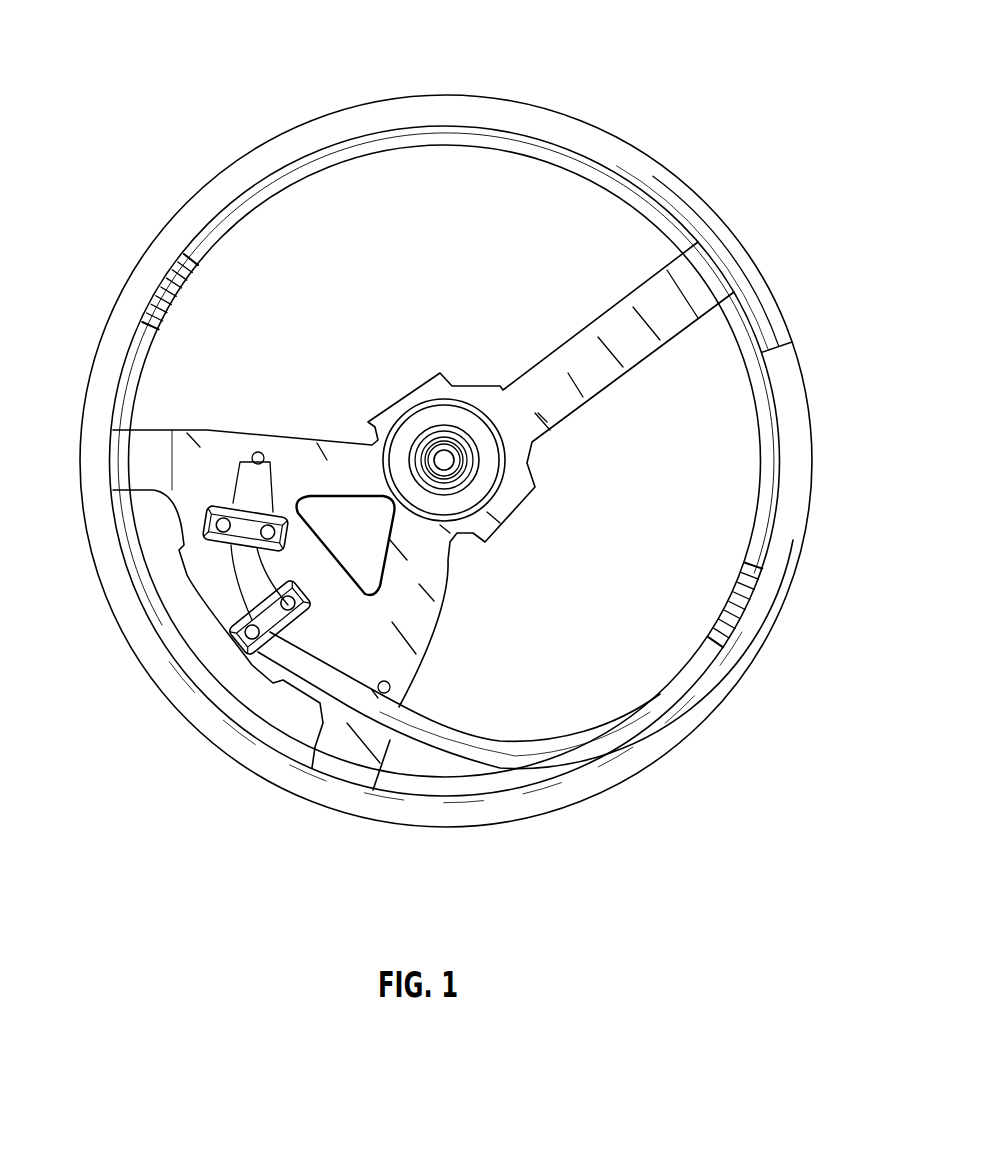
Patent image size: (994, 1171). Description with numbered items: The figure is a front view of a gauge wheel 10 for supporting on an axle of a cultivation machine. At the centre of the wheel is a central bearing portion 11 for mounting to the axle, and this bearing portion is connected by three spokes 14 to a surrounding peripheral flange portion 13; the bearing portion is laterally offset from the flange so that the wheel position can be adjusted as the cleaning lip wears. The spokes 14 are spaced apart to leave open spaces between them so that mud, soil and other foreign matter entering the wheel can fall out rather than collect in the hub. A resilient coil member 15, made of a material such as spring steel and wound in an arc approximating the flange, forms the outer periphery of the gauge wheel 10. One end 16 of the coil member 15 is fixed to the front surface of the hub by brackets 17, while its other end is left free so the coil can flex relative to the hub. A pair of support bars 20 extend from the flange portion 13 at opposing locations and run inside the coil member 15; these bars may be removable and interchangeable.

The gauge wheel 10 is at (220, 40).
The central bearing portion 11 is at (447, 418).
The peripheral flange portion 13 is at (752, 340).
The spokes 14 is at (583, 347).
The resilient coil member 15 is at (643, 722).
The end of the coil member 16 is at (258, 478).
The brackets 17 is at (237, 532).
The support bars 20 is at (170, 268).